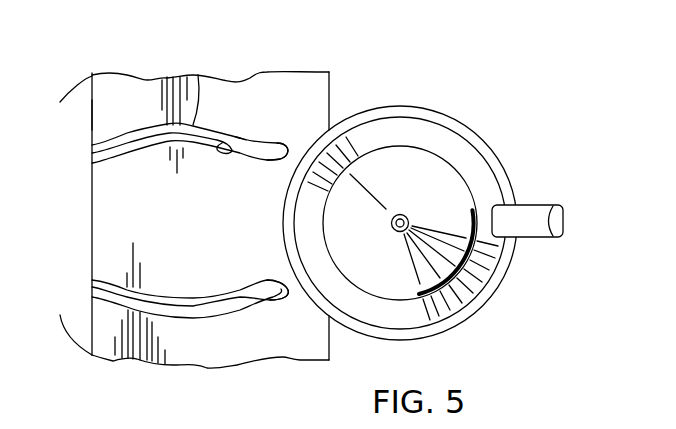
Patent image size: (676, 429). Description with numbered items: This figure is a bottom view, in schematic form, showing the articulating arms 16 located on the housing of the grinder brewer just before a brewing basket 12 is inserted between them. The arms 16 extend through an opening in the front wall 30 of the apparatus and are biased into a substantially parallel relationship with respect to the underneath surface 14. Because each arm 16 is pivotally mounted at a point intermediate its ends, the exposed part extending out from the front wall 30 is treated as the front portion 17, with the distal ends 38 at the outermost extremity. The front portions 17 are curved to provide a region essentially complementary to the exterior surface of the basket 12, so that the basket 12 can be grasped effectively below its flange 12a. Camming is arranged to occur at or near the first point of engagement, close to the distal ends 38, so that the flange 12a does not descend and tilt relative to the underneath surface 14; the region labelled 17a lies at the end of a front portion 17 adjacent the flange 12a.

The basket 12 is at (428, 217).
The flange 12a is at (487, 142).
The underneath surface 14 is at (194, 220).
The arms 16 is at (260, 141).
The front portions 17 is at (198, 75).
The cable end portion 17a is at (243, 135).
The front wall 30 is at (93, 115).
The distal ends 38 is at (280, 148).